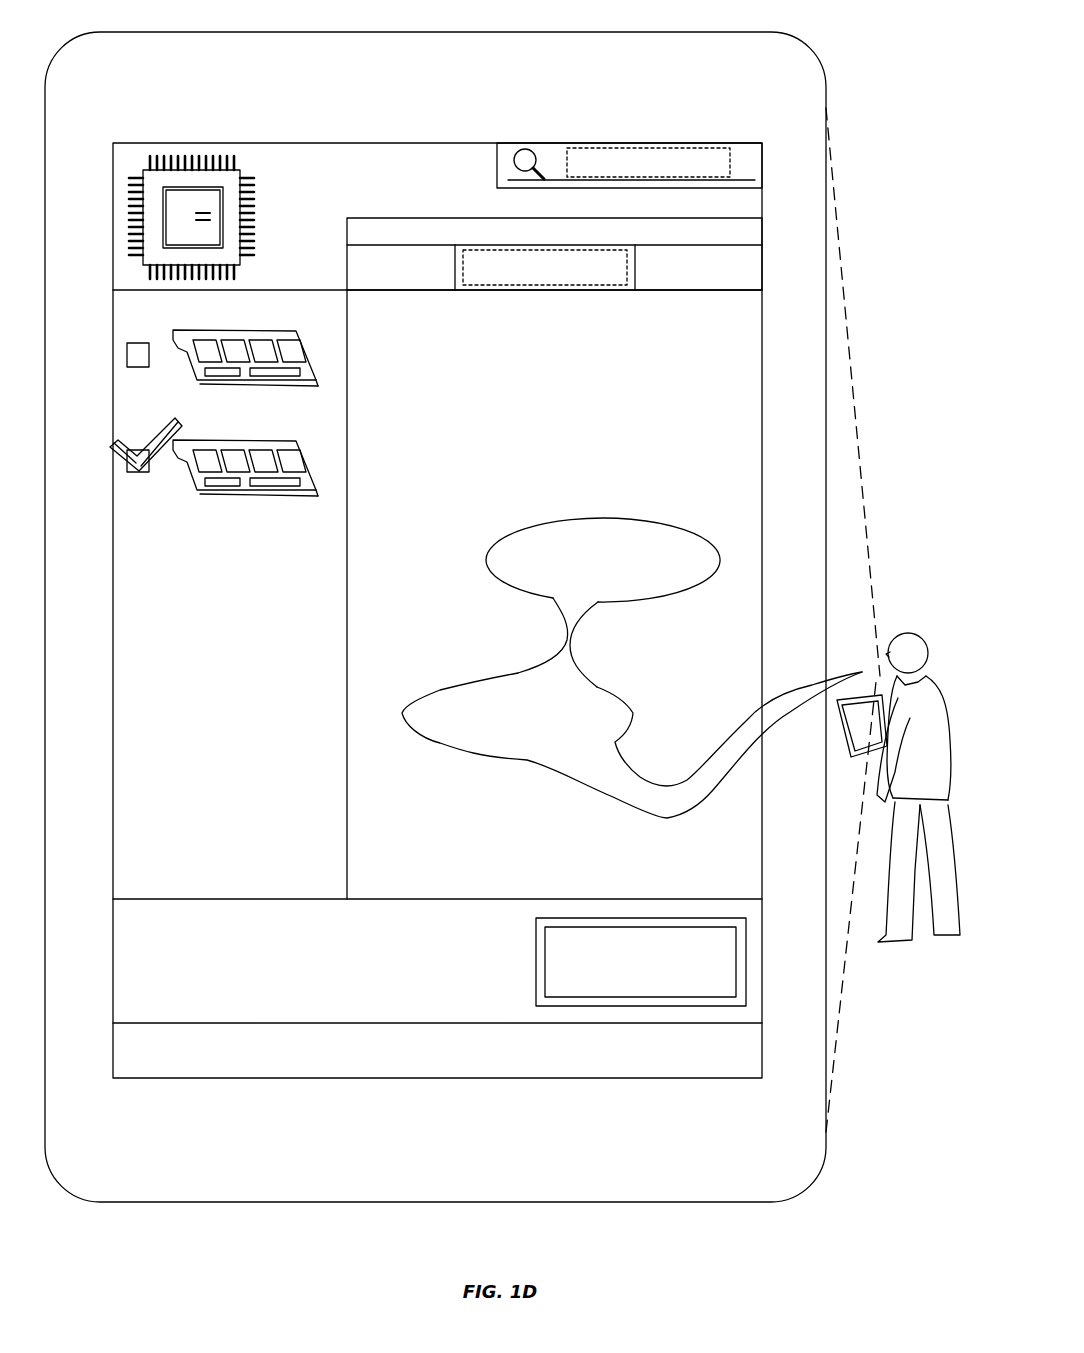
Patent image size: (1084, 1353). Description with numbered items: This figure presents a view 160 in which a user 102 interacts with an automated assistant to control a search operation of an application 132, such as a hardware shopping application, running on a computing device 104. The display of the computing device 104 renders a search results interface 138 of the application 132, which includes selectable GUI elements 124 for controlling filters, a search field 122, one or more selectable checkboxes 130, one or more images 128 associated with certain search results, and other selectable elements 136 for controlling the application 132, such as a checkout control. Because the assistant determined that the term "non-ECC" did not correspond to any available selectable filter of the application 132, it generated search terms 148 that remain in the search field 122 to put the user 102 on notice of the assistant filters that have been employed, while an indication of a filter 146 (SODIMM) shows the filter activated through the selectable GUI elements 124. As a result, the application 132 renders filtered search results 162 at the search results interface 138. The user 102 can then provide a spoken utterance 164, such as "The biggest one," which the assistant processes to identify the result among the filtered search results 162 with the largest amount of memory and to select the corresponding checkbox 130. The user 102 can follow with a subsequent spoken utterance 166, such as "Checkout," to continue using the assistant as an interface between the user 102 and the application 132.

The view 160 is at (850, 78).
The computing device 104 is at (816, 782).
The selectable GUI elements 124 is at (330, 190).
The search field 122 is at (470, 167).
The search terms 148 is at (560, 170).
The filter 146 is at (550, 288).
The filtered search results 162 is at (375, 352).
The search results interface 138 is at (762, 385).
The selectable checkbox 130 is at (143, 478).
The images 128 is at (222, 492).
The spoken utterance 164 is at (505, 586).
The subsequent spoken utterance 166 is at (465, 754).
The other selectable elements 136 is at (622, 918).
The application 132 is at (437, 961).
The user 102 is at (905, 633).